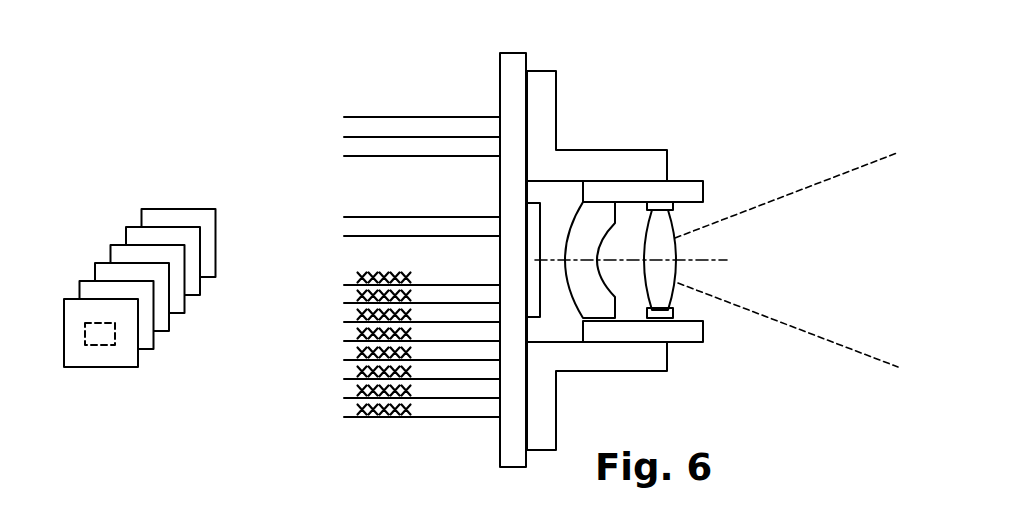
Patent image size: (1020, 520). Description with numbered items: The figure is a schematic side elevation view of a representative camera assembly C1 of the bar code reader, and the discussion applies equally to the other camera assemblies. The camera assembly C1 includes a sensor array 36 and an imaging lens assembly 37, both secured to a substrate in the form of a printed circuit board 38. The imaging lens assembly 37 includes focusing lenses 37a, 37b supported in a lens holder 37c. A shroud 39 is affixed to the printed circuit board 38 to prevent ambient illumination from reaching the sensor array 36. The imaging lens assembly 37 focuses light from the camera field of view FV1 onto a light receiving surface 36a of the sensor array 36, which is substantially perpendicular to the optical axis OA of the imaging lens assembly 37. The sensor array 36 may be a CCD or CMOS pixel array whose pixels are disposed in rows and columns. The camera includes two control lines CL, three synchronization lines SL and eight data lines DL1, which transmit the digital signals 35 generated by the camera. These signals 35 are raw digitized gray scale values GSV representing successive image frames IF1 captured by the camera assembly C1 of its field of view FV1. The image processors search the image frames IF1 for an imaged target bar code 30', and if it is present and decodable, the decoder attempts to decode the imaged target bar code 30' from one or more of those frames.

The camera assembly C1 is at (599, 246).
The printed circuit board 38 is at (500, 82).
The shroud 39 is at (600, 167).
The sensor array 36 is at (535, 287).
The light receiving surface 36a is at (542, 228).
The imaging lens assembly 37 is at (667, 274).
The focusing lens 37a is at (663, 233).
The focusing lens 37b is at (592, 300).
The lens holder 37c is at (682, 328).
The optical axis OA is at (718, 260).
The field of view FV1 is at (825, 183).
The synchronization lines SL is at (338, 113).
The control lines CL is at (338, 203).
The data lines DL1 is at (338, 280).
The digital signals 35 is at (360, 348).
The gray scale values GSV is at (352, 263).
The image frames IF1 is at (82, 378).
The imaged target bar code 30' is at (72, 301).